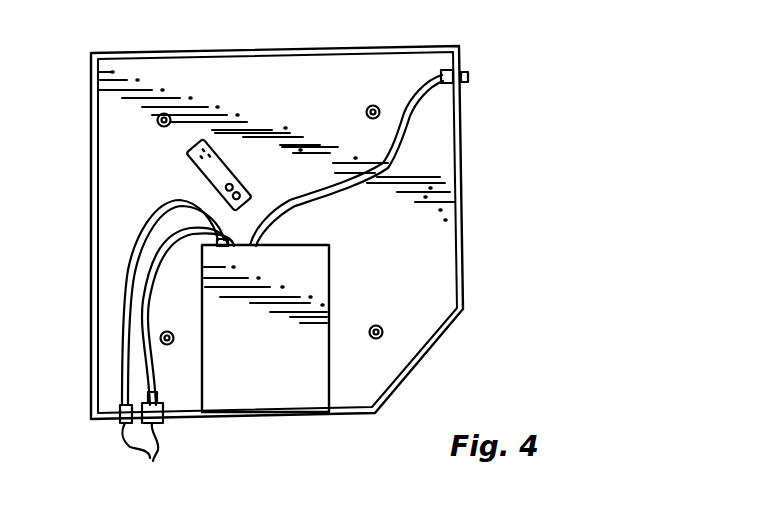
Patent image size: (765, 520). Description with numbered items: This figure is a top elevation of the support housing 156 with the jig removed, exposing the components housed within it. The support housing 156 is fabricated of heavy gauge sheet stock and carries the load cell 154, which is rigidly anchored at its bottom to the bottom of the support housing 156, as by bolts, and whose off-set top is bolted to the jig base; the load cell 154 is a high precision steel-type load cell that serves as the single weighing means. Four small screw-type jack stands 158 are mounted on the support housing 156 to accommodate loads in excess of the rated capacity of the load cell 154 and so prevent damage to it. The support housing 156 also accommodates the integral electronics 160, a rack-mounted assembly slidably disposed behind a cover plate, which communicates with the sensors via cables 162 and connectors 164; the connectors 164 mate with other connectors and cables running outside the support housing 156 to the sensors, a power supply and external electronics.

The load cell 154 is at (229, 161).
The support housing 156 is at (464, 142).
The screw-type jack stands 158 is at (381, 106).
The integral electronics 160 is at (300, 370).
The cables 162 is at (413, 153).
The connectors 164 is at (177, 340).